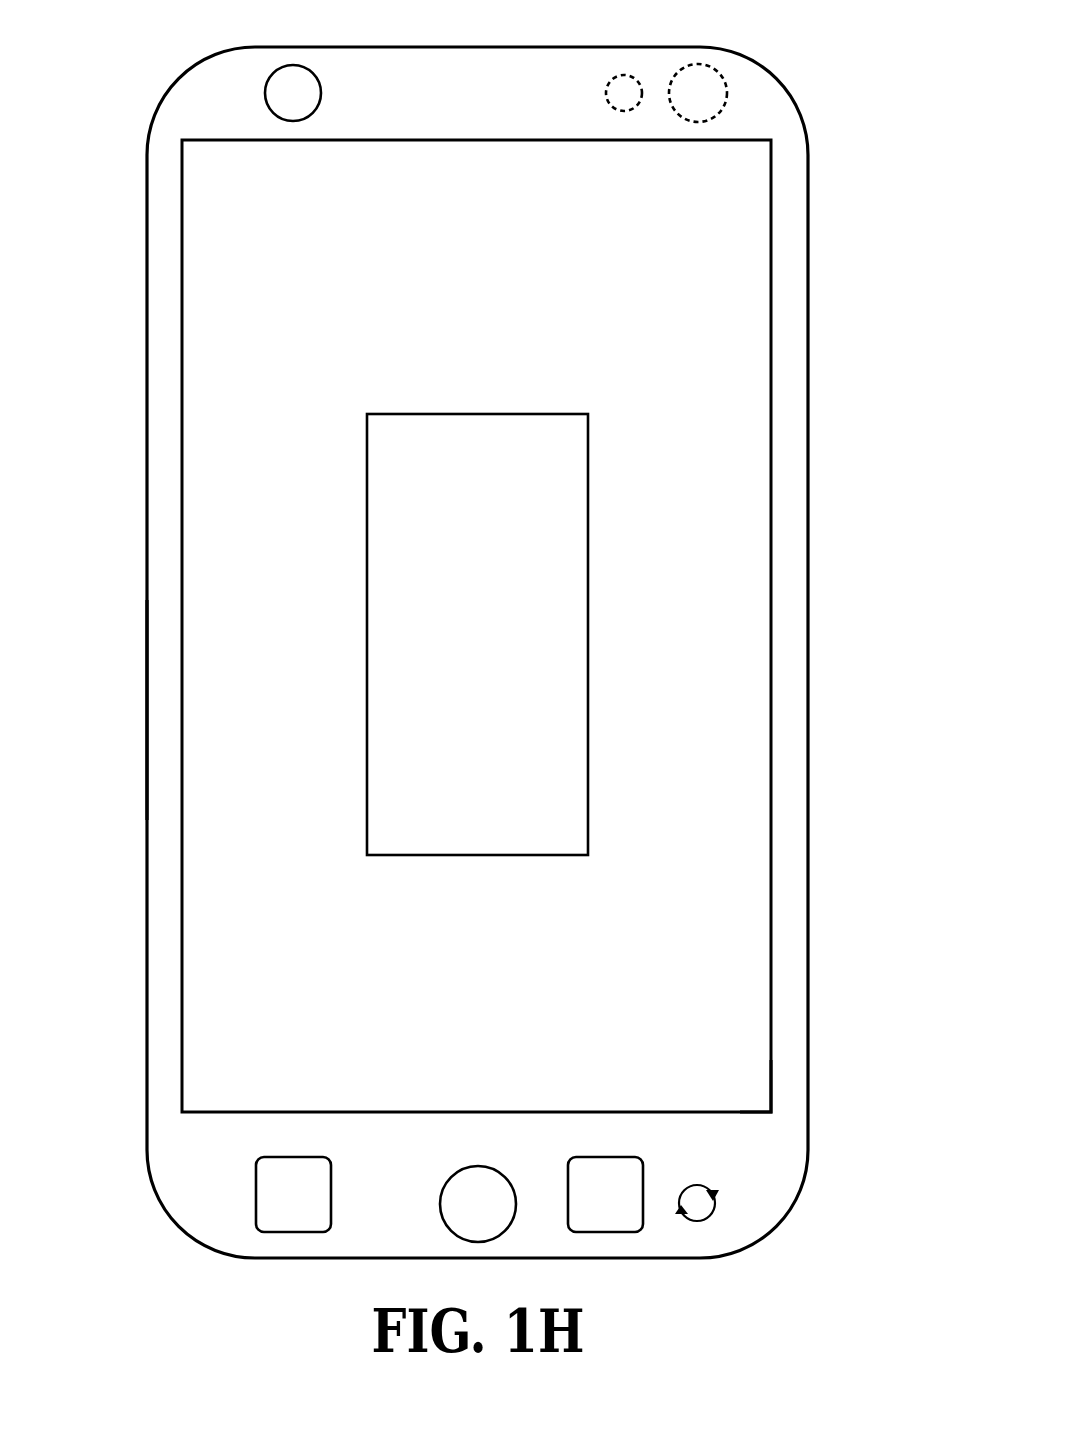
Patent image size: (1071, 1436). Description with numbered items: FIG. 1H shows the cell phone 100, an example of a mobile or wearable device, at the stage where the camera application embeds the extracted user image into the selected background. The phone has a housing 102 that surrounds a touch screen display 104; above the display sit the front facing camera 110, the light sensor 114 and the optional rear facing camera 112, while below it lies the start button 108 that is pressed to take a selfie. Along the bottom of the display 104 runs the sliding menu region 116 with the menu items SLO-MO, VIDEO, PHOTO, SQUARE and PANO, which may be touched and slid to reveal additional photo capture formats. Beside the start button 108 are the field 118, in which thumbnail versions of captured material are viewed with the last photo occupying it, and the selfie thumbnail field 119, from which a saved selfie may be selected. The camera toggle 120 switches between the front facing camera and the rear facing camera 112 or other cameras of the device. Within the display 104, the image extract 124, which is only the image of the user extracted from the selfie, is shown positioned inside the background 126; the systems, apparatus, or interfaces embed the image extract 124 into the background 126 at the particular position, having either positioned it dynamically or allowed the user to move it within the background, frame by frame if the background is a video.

The cell phone 100 is at (852, 656).
The housing 102 is at (147, 708).
The touch screen display 104 is at (771, 927).
The start button 108 is at (459, 1216).
The front facing camera 110 is at (293, 93).
The rear facing camera 112 is at (698, 93).
The light sensor 114 is at (624, 93).
The sliding menu region 116 is at (176, 1130).
The field 118 is at (274, 1207).
The selfie thumbnail field 119 is at (587, 1207).
The camera toggle 120 is at (722, 1208).
The image extract 124 is at (459, 646).
The background 126 is at (706, 1088).